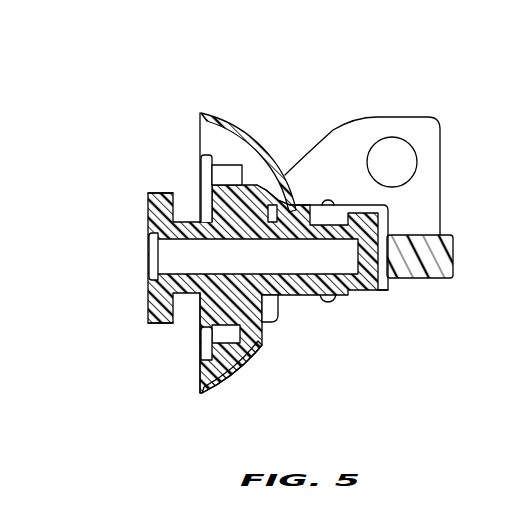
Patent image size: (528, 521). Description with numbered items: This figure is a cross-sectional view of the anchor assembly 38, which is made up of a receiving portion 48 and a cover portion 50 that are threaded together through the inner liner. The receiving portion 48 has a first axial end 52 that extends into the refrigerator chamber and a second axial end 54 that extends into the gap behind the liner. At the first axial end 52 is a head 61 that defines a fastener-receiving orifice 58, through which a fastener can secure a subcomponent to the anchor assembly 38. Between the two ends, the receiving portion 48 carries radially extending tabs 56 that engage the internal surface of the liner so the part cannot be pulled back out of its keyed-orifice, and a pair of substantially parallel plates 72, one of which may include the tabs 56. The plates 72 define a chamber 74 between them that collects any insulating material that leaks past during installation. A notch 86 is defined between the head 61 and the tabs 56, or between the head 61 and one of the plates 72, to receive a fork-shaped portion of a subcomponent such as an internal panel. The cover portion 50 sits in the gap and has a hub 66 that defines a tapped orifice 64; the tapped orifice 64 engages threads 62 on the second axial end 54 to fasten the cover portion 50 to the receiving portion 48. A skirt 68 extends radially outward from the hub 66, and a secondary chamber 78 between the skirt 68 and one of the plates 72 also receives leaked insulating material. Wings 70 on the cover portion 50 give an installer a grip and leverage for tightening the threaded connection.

The anchor assembly 38 is at (345, 67).
The receiving portion 48 is at (146, 307).
The cover portion 50 is at (435, 183).
The first axial end 52 is at (148, 227).
The second axial end 54 is at (390, 291).
The tabs 56 is at (185, 207).
The fastener-receiving orifice 58 is at (148, 274).
The head 61 is at (160, 194).
The threads 62 is at (340, 298).
The tapped orifice 64 is at (328, 300).
The hub 66 is at (296, 185).
The skirt 68 is at (246, 112).
The wings 70 is at (408, 134).
The substantially parallel plates 72 is at (200, 345).
The chamber 74 is at (257, 180).
The secondary chamber 78 is at (278, 312).
The notch 86 is at (178, 192).